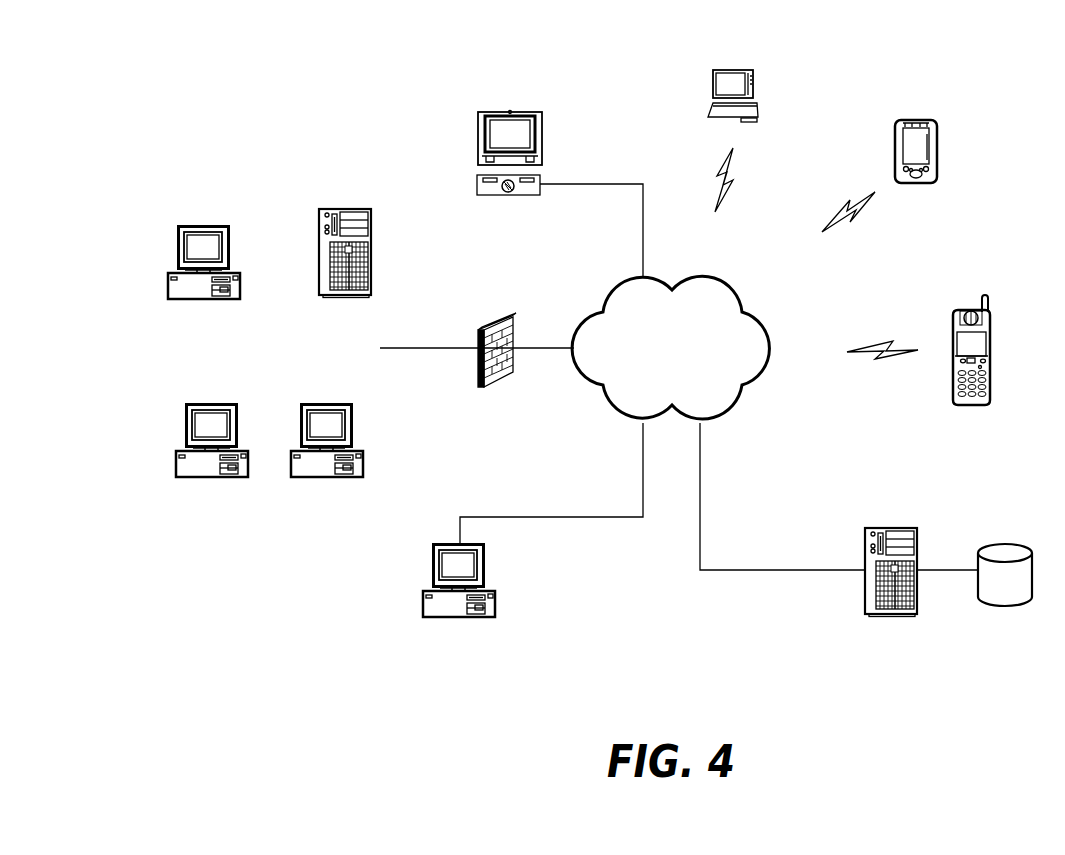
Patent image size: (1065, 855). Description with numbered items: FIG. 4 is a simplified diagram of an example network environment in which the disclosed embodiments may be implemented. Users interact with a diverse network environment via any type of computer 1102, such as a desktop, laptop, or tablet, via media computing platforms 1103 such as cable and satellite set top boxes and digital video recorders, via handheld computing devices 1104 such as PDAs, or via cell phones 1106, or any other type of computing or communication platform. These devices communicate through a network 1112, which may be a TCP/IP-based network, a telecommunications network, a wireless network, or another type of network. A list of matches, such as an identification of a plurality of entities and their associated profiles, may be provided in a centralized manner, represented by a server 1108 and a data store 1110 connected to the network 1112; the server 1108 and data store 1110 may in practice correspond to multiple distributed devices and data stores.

The computer 1102 is at (177, 252).
The media computing platform 1103 is at (477, 184).
The handheld computing device 1104 is at (902, 122).
The cell phone 1106 is at (955, 312).
The server 1108 is at (874, 526).
The data store 1110 is at (1003, 543).
The network 1112 is at (617, 291).